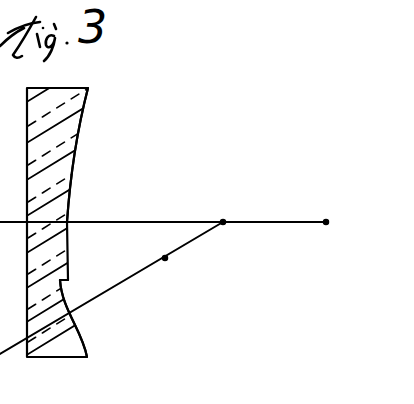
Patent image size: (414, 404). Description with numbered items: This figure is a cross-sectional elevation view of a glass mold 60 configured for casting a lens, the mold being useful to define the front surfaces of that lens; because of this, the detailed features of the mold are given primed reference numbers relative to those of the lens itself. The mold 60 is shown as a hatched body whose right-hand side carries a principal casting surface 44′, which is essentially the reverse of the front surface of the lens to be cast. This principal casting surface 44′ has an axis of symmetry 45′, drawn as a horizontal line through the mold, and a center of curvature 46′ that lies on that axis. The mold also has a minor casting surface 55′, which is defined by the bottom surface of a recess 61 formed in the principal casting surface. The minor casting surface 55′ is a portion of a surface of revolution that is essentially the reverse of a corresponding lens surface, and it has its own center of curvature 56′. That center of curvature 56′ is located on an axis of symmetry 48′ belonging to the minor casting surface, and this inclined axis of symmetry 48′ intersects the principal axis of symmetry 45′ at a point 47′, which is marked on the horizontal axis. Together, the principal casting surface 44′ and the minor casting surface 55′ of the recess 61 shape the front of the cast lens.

The glass mold 60 is at (167, 100).
The principal casting surface 44′ is at (142, 152).
The axis of symmetry 45′ is at (207, 186).
The point 47′ is at (286, 173).
The center of curvature 46′ is at (375, 187).
The recess 61 is at (67, 289).
The minor casting surface 55′ is at (77, 302).
The center of curvature 56′ is at (207, 271).
The axis of symmetry 48′ is at (169, 299).